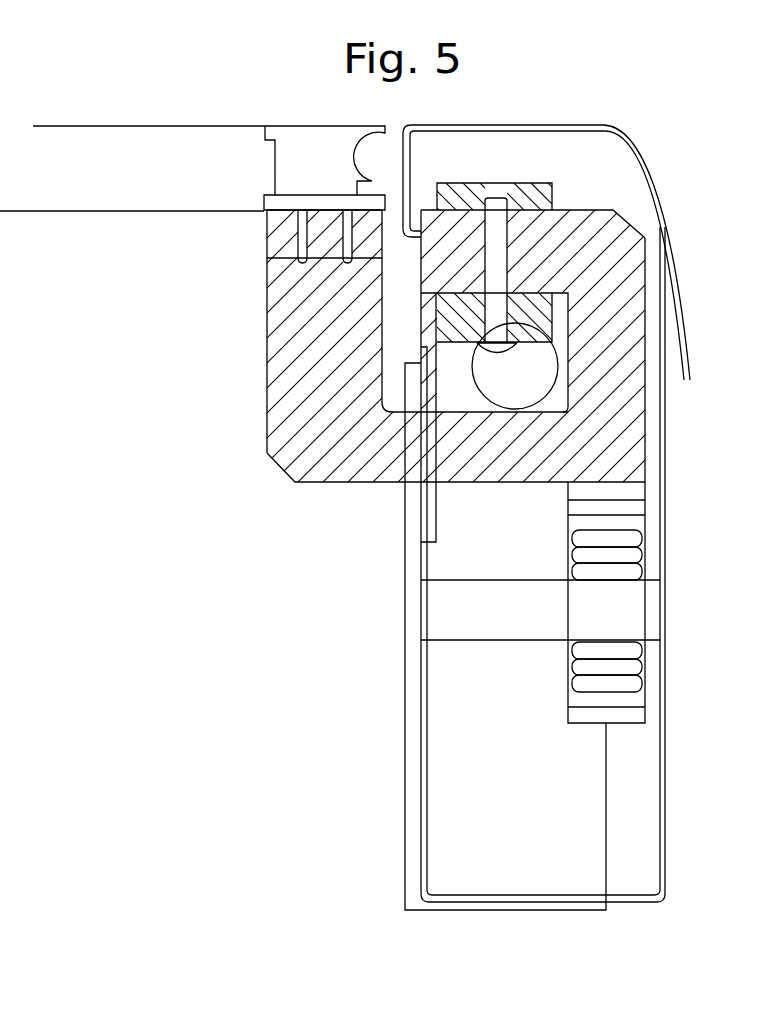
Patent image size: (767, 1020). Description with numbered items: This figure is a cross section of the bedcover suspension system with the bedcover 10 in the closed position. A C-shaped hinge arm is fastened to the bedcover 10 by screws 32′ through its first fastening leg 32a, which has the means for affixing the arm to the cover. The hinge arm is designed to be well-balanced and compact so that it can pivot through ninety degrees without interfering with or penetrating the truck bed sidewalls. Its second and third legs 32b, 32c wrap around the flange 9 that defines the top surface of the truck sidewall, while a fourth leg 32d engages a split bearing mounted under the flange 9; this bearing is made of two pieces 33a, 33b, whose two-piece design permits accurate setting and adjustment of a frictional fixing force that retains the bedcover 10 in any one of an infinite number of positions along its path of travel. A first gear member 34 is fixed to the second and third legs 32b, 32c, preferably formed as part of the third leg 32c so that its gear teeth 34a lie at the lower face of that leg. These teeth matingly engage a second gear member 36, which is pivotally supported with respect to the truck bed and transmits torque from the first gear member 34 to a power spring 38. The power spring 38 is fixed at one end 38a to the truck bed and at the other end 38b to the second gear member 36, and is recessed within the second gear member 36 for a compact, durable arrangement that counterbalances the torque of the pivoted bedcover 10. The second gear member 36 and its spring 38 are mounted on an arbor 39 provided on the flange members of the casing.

The flange 9 is at (652, 187).
The bedcover 10 is at (146, 230).
The screws 32′ is at (348, 194).
The first fastening leg 32a is at (295, 347).
The second leg 32b is at (352, 458).
The third leg 32c is at (623, 358).
The fourth leg 32d is at (558, 255).
The split bearing piece 33a is at (540, 192).
The split bearing piece 33b is at (553, 317).
The first gear member 34 is at (637, 433).
The gear teeth 34a is at (635, 488).
The second gear member 36 is at (637, 517).
The power spring 38 is at (637, 563).
The spring end 38a is at (563, 656).
The spring end 38b is at (563, 691).
The arbor 39 is at (505, 621).